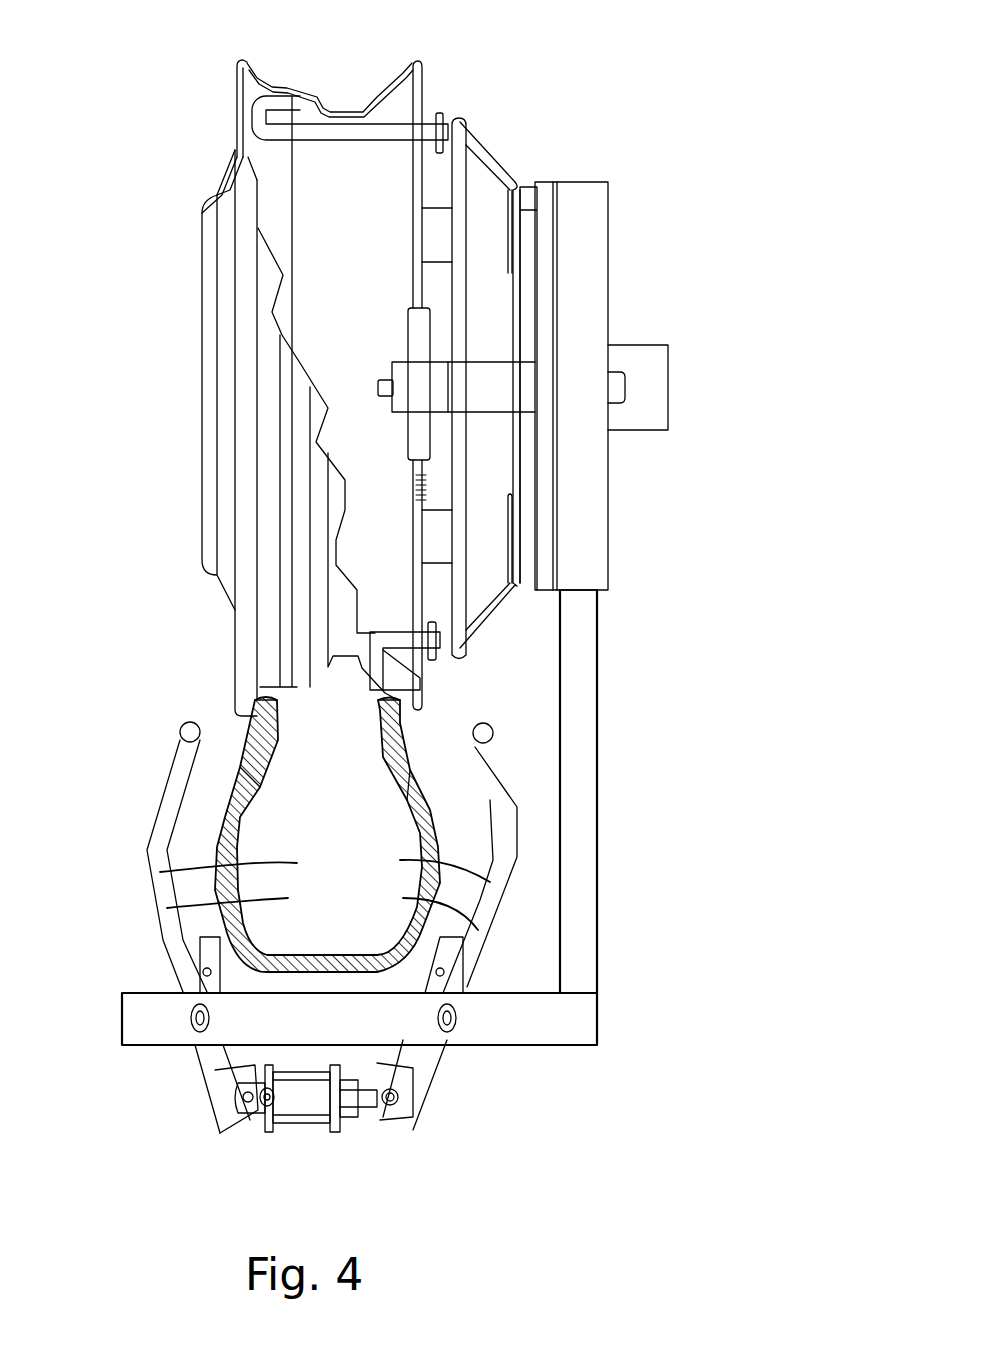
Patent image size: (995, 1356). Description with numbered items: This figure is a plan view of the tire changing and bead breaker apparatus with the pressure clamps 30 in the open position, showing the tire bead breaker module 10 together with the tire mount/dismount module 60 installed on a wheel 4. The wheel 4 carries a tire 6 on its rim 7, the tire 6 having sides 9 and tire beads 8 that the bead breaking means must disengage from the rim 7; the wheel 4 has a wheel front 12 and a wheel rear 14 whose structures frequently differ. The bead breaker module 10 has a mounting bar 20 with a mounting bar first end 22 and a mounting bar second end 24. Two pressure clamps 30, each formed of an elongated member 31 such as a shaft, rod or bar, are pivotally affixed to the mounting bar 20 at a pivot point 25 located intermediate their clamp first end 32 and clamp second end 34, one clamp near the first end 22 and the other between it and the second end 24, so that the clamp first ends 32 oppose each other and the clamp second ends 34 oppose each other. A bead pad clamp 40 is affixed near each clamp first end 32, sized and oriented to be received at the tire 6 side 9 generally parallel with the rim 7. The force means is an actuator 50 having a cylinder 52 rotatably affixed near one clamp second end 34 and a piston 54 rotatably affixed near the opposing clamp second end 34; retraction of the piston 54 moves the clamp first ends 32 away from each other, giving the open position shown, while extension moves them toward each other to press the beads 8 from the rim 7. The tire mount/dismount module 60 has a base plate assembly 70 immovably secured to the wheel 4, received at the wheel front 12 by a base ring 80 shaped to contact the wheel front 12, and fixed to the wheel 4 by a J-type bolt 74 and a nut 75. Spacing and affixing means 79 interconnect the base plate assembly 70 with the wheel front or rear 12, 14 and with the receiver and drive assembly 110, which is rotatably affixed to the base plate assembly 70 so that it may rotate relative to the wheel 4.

The wheel 4 is at (215, 313).
The tire 6 is at (243, 800).
The rim 7 is at (257, 60).
The tire bead 8 is at (280, 705).
The tire side 9 is at (240, 740).
The tire bead breaker module 10 is at (628, 810).
The wheel front 12 is at (210, 478).
The wheel rear 14 is at (427, 90).
The mounting bar 20 is at (583, 683).
The mounting bar first end 22 is at (127, 1018).
The mounting bar second end 24 is at (583, 618).
The pivot point 25 is at (198, 1028).
The pressure clamp 30 is at (325, 863).
The elongated member 31 is at (322, 907).
The clamp first end 32 is at (178, 760).
The clamp second end 34 is at (225, 1127).
The bead pad clamp 40 is at (188, 728).
The actuator 50 is at (253, 1153).
The cylinder 52 is at (313, 1107).
The piston 54 is at (368, 1107).
The tire mount/dismount module 60 is at (697, 280).
The base plate assembly 70 is at (547, 132).
The bolt 74 is at (327, 137).
The nut 75 is at (438, 115).
The spacing and affixing means 79 is at (445, 217).
The base ring 80 is at (462, 122).
The receiver and drive assembly 110 is at (575, 163).